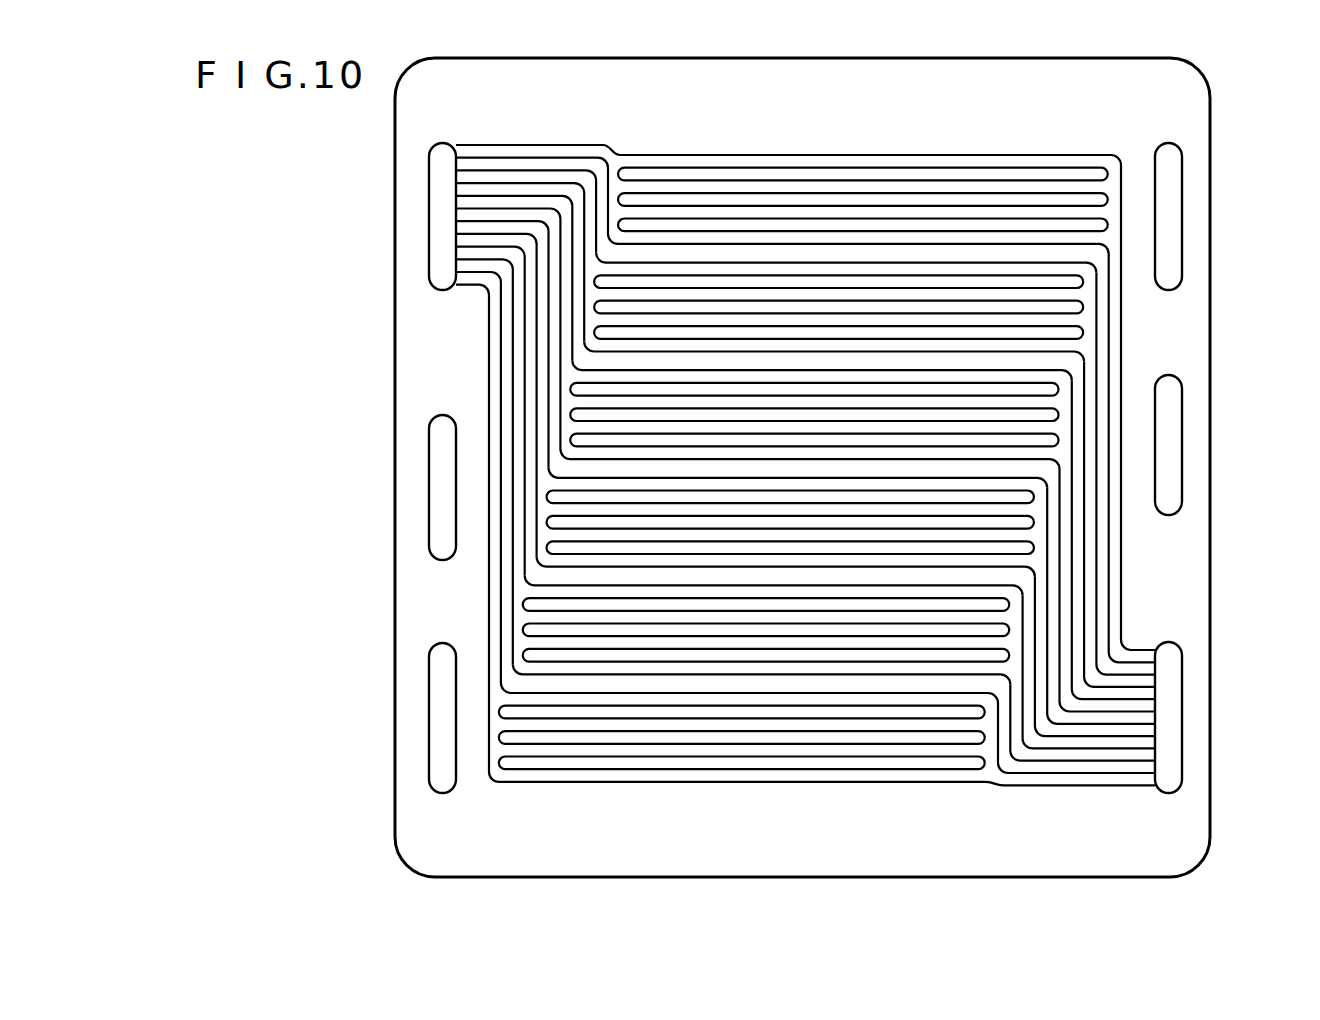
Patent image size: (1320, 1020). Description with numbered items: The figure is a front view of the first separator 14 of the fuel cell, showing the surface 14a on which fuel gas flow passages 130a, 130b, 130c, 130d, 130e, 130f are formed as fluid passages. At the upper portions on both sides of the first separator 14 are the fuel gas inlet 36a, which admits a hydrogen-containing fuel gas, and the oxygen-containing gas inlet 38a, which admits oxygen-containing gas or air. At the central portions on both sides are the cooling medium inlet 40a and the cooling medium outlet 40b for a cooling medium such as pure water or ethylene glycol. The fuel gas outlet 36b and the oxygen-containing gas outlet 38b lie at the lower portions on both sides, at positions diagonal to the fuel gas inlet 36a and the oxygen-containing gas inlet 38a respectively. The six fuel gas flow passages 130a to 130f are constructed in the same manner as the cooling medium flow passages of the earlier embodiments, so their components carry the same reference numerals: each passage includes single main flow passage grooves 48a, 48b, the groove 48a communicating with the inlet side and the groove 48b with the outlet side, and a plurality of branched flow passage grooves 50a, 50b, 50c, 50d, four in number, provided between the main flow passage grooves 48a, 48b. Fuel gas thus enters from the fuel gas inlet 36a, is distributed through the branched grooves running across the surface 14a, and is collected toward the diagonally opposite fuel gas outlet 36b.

The first separator 14 is at (984, 54).
The surface of the first separator 14a is at (772, 75).
The fuel gas inlet 36a is at (440, 208).
The fuel gas outlet 36b is at (1168, 723).
The oxygen-containing gas inlet 38a is at (1170, 240).
The oxygen-containing gas outlet 38b is at (440, 716).
The cooling medium inlet 40a is at (1170, 476).
The cooling medium outlet 40b is at (436, 488).
The main flow passage groove 48a is at (522, 116).
The main flow passage groove 48b is at (1133, 680).
The branched flow passage groove 50a is at (680, 129).
The branched flow passage groove 50b is at (720, 185).
The branched flow passage groove 50c is at (857, 212).
The branched flow passage groove 50d is at (990, 238).
The fuel gas flow passage 130a is at (864, 164).
The fuel gas flow passage 130b is at (756, 256).
The fuel gas flow passage 130c is at (883, 368).
The fuel gas flow passage 130d is at (631, 574).
The fuel gas flow passage 130e is at (705, 682).
The fuel gas flow passage 130f is at (803, 780).